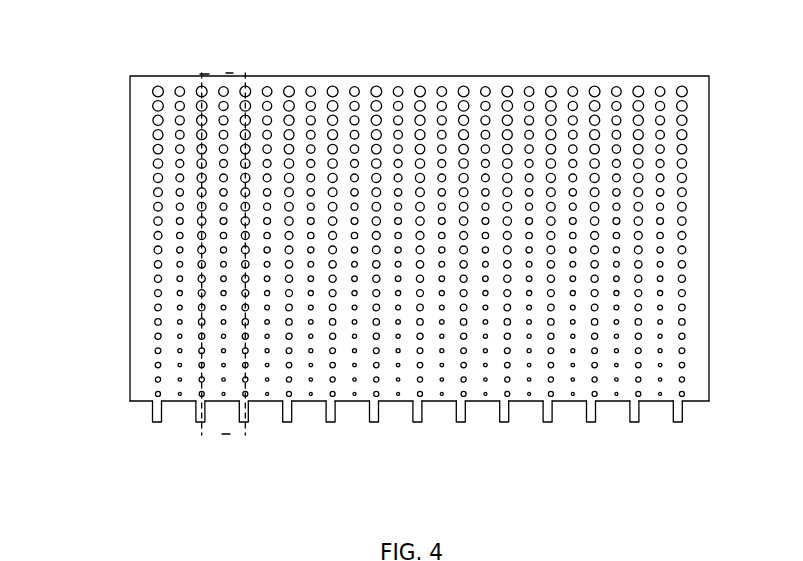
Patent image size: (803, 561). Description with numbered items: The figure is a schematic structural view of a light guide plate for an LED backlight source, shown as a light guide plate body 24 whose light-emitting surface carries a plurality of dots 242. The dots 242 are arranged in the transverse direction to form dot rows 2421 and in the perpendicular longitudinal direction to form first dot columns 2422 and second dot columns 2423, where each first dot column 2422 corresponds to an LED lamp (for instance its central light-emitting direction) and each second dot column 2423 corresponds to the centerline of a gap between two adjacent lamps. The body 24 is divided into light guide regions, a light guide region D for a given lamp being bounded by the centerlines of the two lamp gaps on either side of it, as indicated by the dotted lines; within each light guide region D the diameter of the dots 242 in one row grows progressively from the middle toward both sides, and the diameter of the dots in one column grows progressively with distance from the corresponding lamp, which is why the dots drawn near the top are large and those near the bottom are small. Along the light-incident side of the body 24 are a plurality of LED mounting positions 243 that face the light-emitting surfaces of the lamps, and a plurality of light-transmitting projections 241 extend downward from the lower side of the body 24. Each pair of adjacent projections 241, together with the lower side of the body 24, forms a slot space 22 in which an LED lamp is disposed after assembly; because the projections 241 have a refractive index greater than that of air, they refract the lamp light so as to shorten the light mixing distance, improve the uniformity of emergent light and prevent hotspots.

The slot space 22 is at (170, 410).
The light guide plate body 24 is at (387, 381).
The projection 241 is at (288, 413).
The dot 242 is at (333, 397).
The LED mounting position 243 is at (658, 423).
The dot row 2421 is at (148, 395).
The first dot column 2422 is at (222, 86).
The second dot column 2423 is at (159, 86).
The light guide region D is at (222, 382).